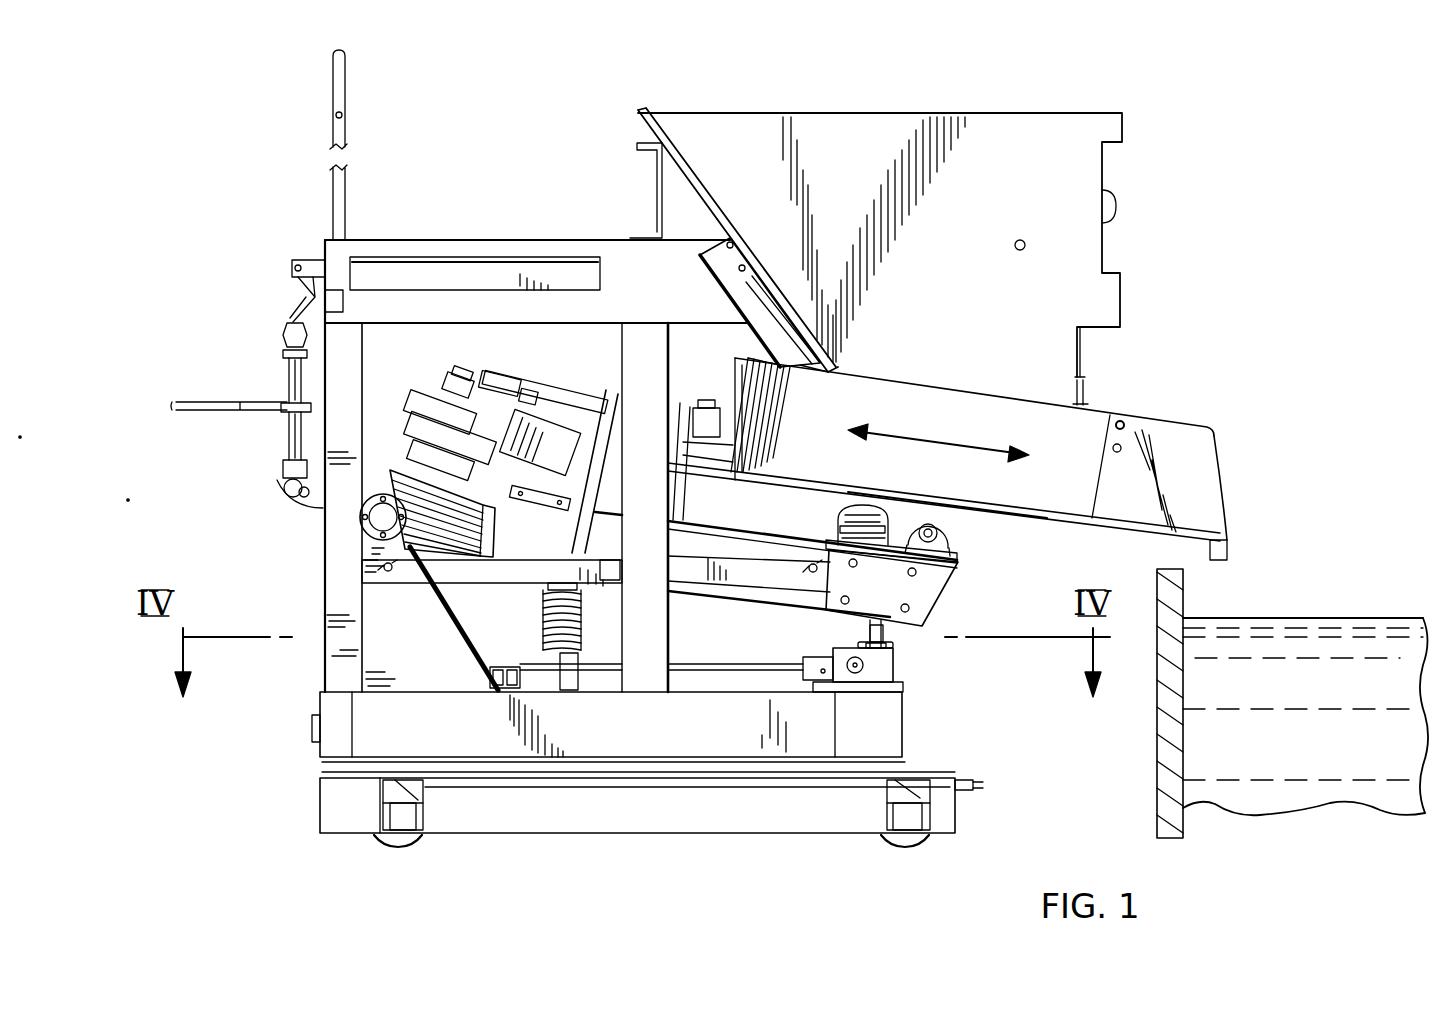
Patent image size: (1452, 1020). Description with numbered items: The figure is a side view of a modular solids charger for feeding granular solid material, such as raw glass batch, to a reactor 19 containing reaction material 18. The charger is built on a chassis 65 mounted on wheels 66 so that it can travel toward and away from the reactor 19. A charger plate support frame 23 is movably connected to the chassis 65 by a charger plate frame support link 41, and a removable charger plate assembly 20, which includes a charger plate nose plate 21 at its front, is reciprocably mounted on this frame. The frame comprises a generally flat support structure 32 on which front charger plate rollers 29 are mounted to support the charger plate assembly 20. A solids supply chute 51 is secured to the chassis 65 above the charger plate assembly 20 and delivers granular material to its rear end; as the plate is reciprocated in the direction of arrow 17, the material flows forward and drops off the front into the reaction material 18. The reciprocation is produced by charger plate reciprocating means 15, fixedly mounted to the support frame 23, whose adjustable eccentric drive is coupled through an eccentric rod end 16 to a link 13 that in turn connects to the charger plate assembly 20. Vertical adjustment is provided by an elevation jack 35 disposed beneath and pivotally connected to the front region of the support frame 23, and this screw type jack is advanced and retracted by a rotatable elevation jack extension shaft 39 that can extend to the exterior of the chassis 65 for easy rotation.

The link 13 is at (548, 395).
The charger plate reciprocating means 15 is at (386, 408).
The eccentric rod end 16 is at (440, 385).
The arrow 17 is at (952, 442).
The reaction material 18 is at (1318, 761).
The reactor 19 is at (1155, 750).
The removable charger plate assembly 20 is at (1097, 412).
The charger plate nose plate 21 is at (1223, 473).
The charger plate support frame 23 is at (567, 453).
The front charger plate rollers 29 is at (950, 530).
The generally flat support structure 32 is at (937, 587).
The elevation jack 35 is at (893, 670).
The rotatable elevation jack extension shaft 39 is at (775, 668).
The charger plate frame support link 41 is at (488, 580).
The solids supply chute 51 is at (997, 113).
The chassis 65 is at (323, 638).
The wheels 66 is at (410, 840).